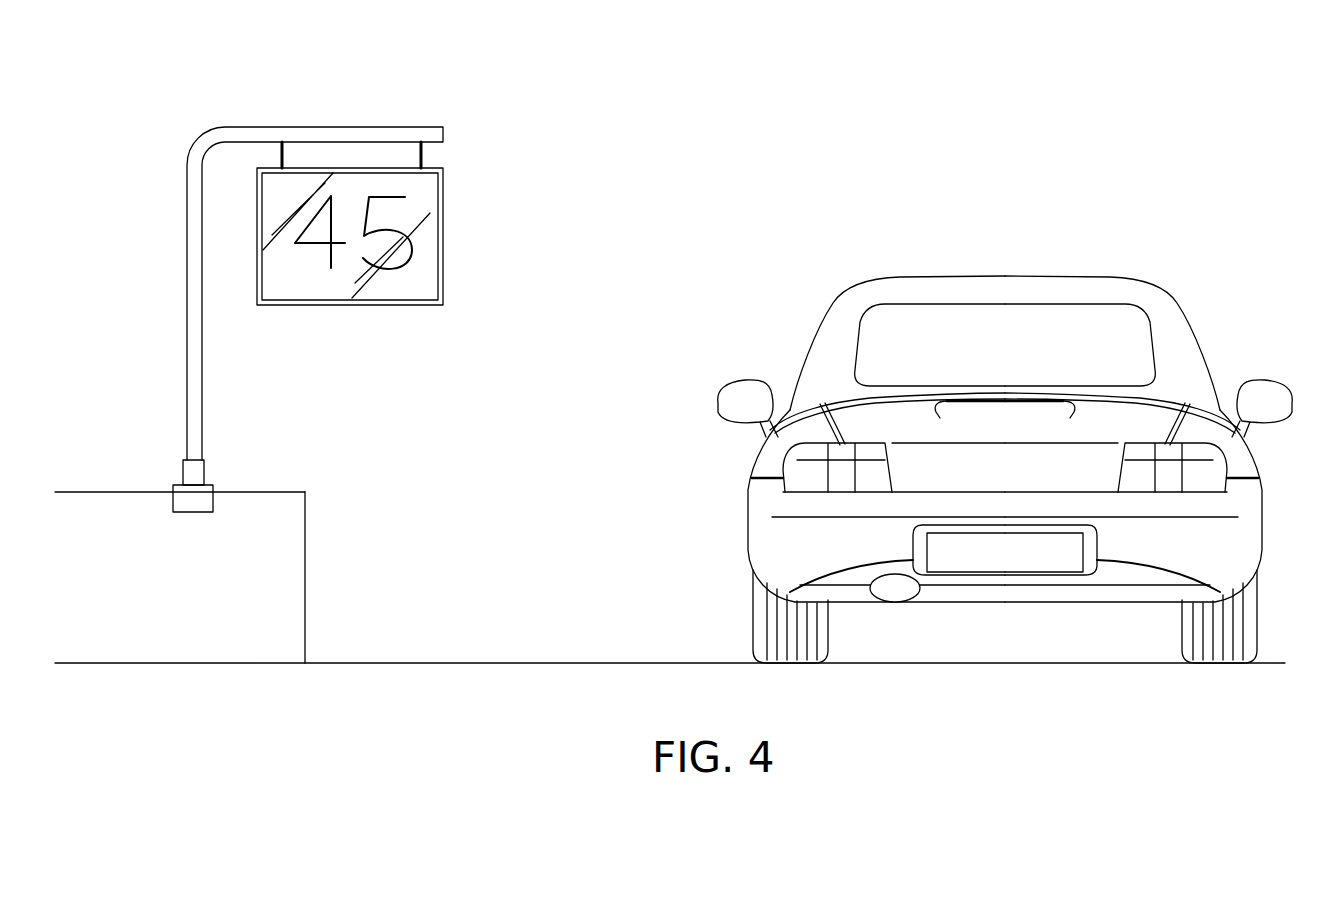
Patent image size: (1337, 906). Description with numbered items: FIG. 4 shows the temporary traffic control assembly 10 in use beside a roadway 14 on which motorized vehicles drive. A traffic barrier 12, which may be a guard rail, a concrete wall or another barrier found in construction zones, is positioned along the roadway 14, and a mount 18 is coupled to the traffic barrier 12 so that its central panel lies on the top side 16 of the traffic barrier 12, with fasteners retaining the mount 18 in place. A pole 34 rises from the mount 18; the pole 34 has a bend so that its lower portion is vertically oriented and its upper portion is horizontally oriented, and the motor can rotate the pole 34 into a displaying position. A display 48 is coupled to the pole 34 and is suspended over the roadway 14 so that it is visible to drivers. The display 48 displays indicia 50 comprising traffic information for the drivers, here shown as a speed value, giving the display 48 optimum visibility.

The temporary traffic control assembly 10 is at (593, 161).
The traffic barrier 12 is at (305, 492).
The roadway 14 is at (668, 662).
The top side 16 is at (126, 492).
The mount 18 is at (212, 490).
The pole 34 is at (186, 194).
The display 48 is at (437, 212).
The indicia 50 is at (348, 195).